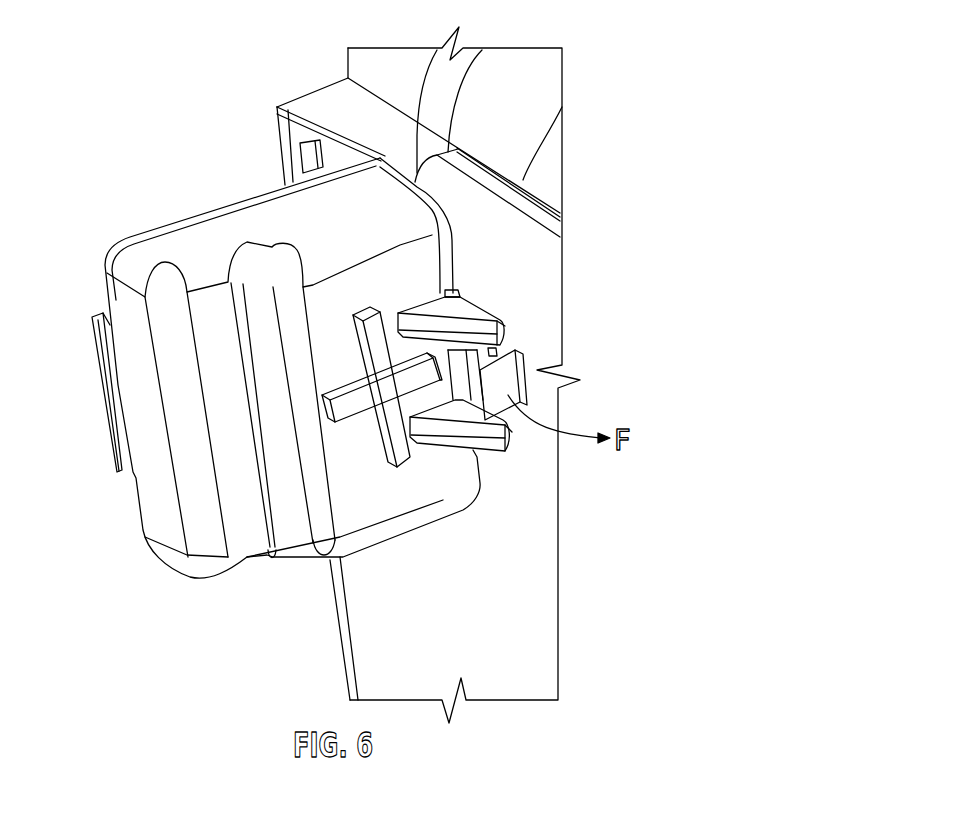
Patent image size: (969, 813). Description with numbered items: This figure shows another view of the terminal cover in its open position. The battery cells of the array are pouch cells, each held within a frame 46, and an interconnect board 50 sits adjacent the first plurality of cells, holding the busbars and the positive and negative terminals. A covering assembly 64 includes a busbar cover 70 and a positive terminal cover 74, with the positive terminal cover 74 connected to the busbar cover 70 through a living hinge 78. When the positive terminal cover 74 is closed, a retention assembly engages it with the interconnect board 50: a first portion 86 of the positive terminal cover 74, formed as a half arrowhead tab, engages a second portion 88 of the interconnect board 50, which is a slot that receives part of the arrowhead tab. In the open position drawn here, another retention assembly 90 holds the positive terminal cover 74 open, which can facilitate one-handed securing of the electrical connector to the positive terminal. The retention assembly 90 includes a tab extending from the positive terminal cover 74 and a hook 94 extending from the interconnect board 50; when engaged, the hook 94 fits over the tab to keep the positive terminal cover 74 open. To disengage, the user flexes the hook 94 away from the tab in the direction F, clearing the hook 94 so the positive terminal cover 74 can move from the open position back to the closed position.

The frame 46 is at (528, 65).
The interconnect board 50 is at (324, 98).
The covering assembly 64 is at (373, 664).
The busbar cover 70 is at (545, 660).
The positive terminal cover 74 is at (228, 462).
The living hinge 78 is at (375, 141).
The first portion 86 is at (97, 372).
The second portion 88 is at (312, 167).
The retention assembly 90 is at (450, 453).
The hook 94 is at (513, 377).